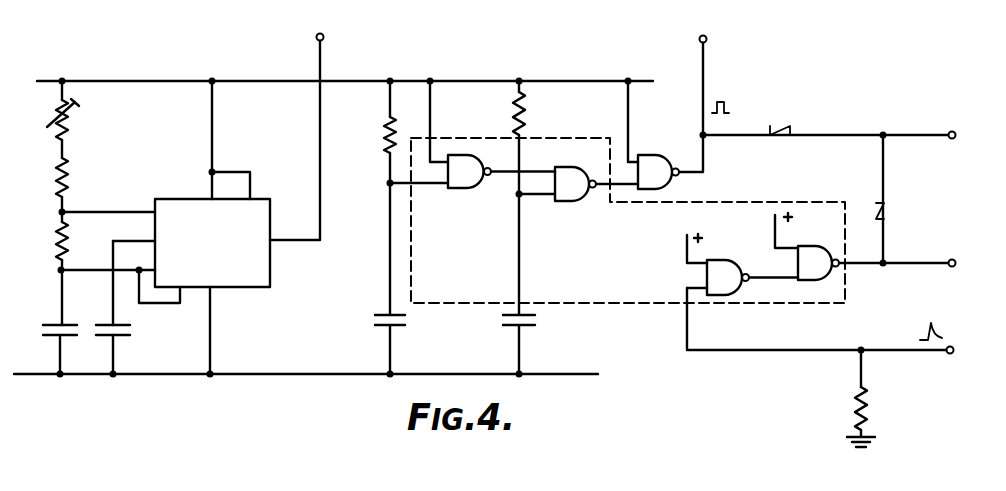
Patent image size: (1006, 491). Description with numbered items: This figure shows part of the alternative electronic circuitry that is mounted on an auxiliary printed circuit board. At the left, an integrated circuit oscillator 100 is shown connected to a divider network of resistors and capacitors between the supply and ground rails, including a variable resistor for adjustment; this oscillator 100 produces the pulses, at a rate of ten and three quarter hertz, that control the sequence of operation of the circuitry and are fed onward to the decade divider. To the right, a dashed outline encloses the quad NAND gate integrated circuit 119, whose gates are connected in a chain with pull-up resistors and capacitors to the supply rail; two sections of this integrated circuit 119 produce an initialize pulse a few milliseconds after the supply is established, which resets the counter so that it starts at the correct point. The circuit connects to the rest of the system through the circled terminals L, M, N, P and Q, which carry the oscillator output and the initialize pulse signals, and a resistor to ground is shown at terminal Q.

The integrated circuit oscillator 100 is at (212, 243).
The quad NAND gate integrated circuit 119 is at (556, 141).
The terminal L is at (313, 131).
The terminal M is at (725, 78).
The terminal N is at (848, 134).
The terminal P is at (916, 206).
The terminal Q is at (837, 367).